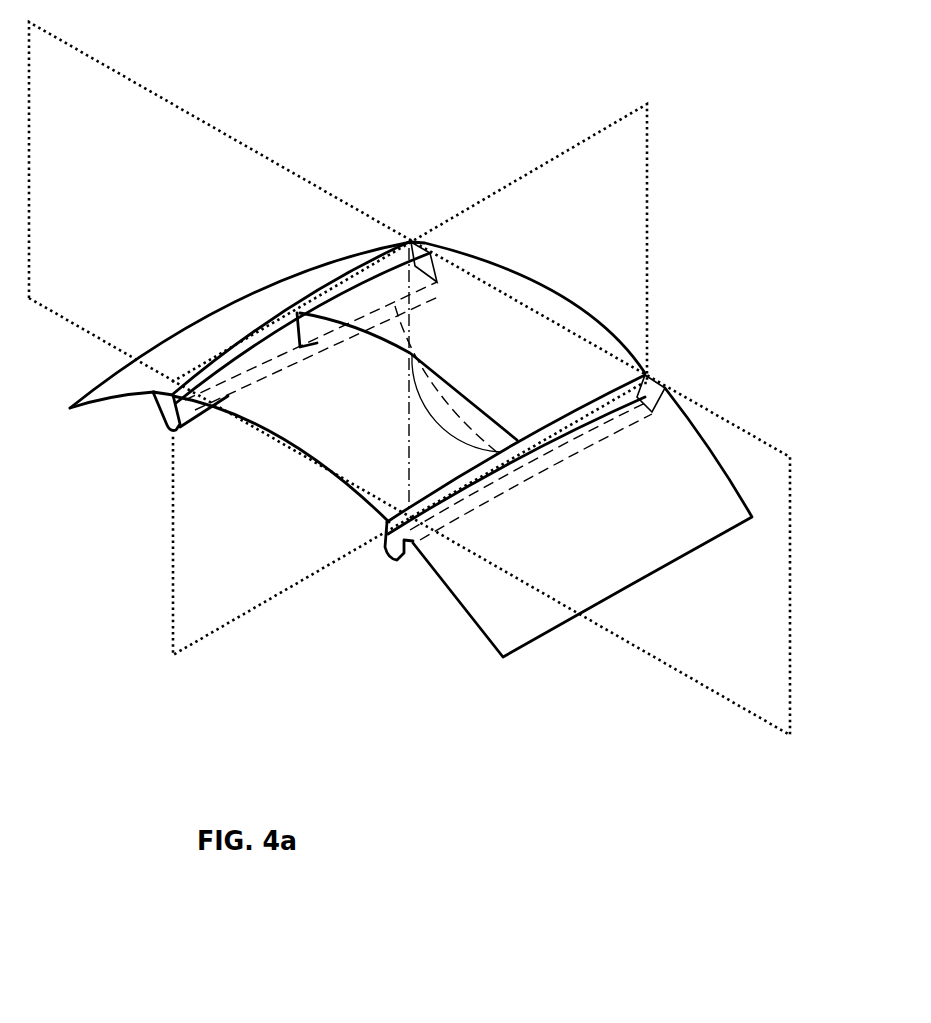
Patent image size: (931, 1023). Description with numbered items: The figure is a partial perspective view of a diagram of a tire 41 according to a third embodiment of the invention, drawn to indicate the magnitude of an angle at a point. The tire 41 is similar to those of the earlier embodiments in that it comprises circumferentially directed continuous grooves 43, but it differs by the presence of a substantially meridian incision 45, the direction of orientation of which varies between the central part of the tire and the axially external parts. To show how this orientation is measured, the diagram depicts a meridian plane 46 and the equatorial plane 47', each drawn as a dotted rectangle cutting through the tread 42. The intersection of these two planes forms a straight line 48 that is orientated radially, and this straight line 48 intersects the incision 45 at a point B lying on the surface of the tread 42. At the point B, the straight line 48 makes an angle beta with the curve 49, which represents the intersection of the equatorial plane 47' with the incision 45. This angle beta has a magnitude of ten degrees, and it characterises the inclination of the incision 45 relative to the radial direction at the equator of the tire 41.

The tire 41 is at (705, 382).
The tread 42 is at (543, 306).
The circumferentially directed continuous grooves 43 is at (163, 402).
The substantially meridian incision 45 is at (357, 337).
The meridian plane 46 is at (188, 113).
The equatorial plane 47' is at (409, 355).
The straight line 48 is at (407, 442).
The curve 49 is at (420, 360).
The point B is at (410, 351).